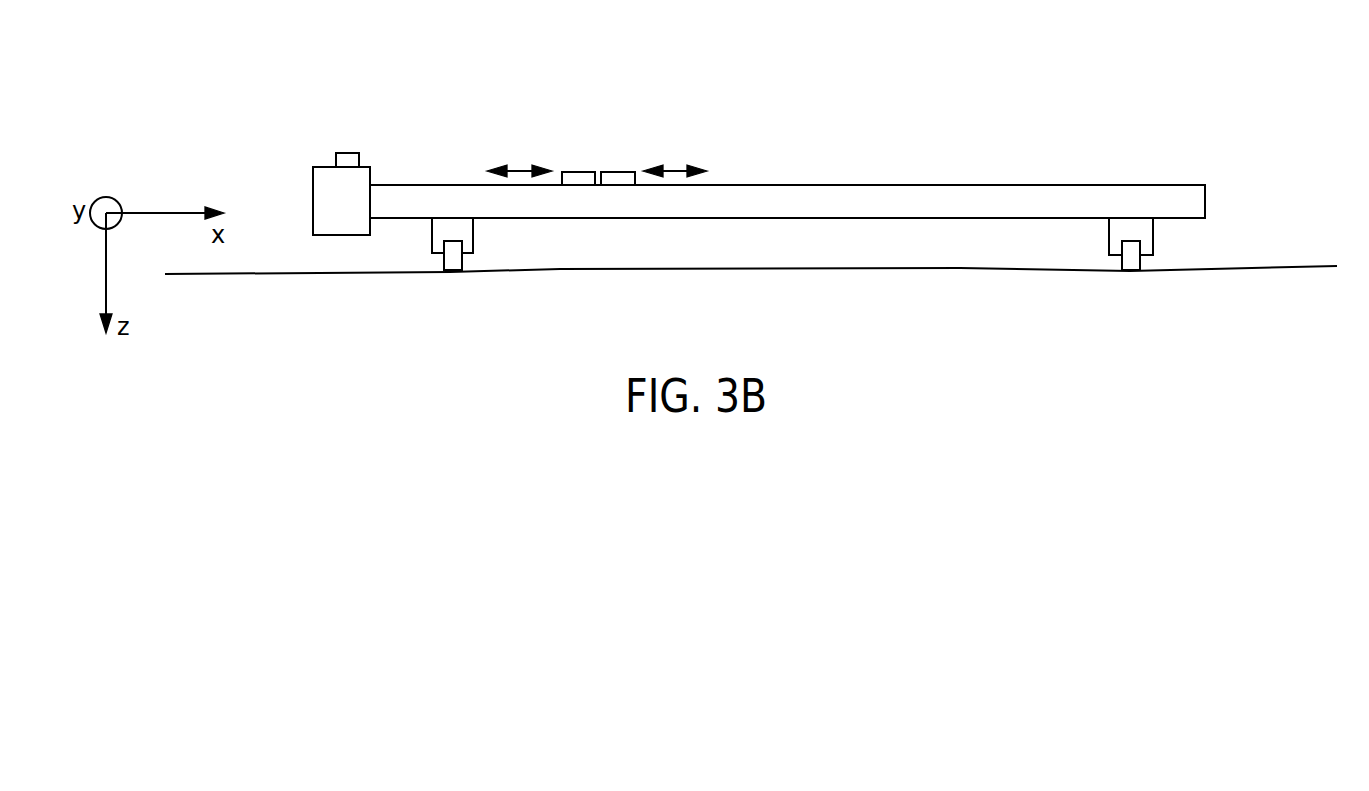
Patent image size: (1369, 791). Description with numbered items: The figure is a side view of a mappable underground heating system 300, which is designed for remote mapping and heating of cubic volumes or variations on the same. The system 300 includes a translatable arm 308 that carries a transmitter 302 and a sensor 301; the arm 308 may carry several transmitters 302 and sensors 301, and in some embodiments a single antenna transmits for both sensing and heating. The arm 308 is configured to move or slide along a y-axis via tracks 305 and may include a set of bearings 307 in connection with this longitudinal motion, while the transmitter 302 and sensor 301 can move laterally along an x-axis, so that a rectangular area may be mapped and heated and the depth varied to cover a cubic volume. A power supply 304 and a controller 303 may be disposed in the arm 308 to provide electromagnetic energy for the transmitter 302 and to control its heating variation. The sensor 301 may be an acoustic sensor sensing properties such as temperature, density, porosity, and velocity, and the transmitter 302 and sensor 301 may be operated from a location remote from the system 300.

The mappable underground heating system 300 is at (877, 87).
The sensor 301 is at (622, 176).
The transmitter 302 is at (577, 176).
The controller 303 is at (348, 157).
The power supply 304 is at (330, 186).
The tracks 305 is at (458, 260).
The bearings 307 is at (443, 228).
The translatable arm 308 is at (412, 192).